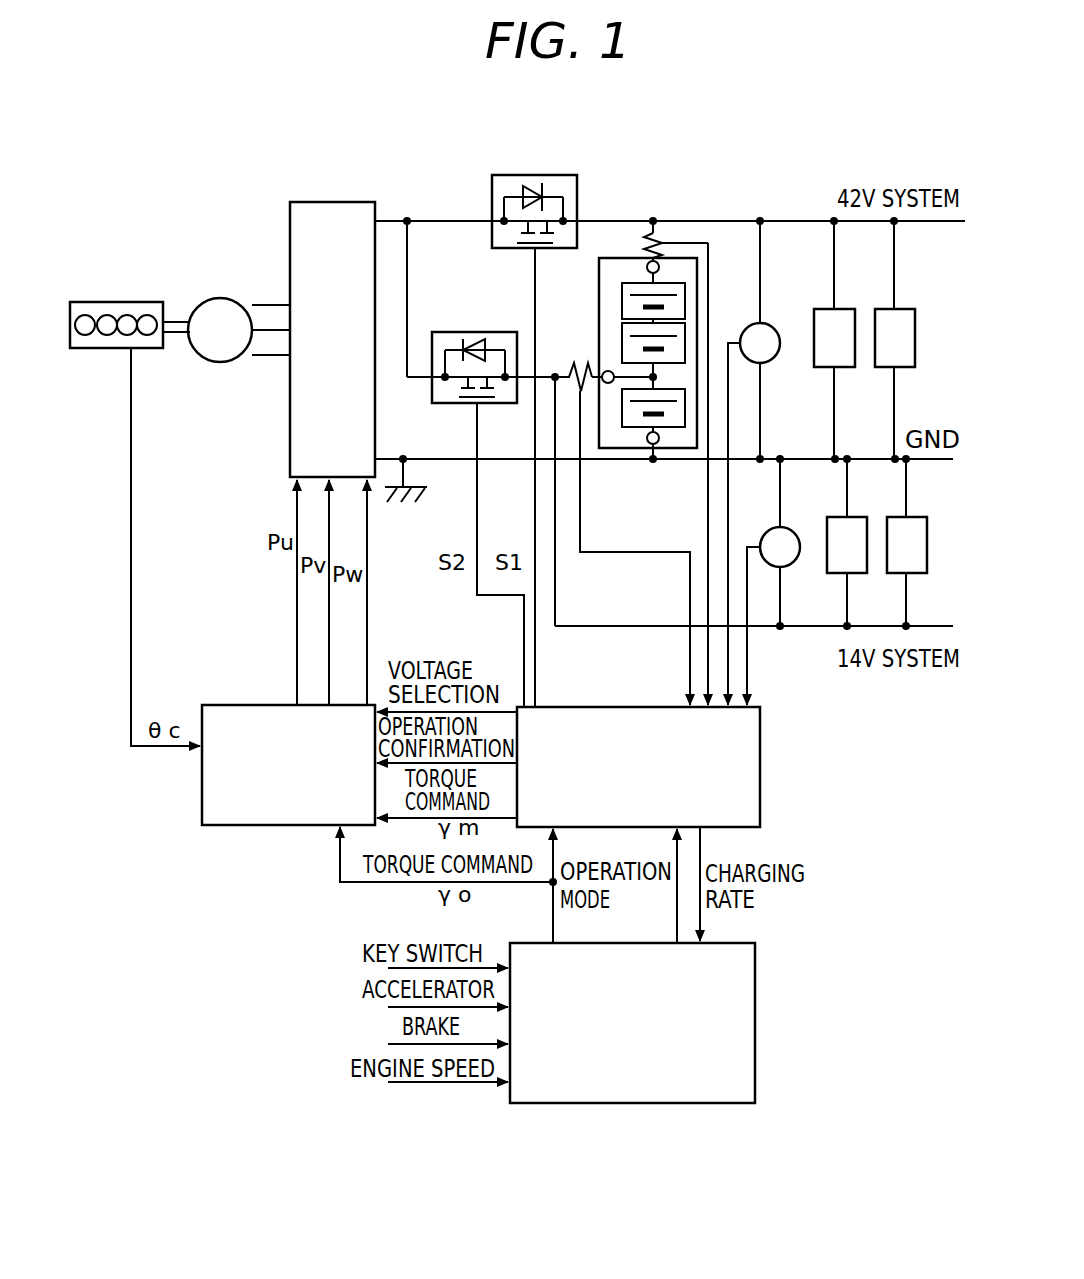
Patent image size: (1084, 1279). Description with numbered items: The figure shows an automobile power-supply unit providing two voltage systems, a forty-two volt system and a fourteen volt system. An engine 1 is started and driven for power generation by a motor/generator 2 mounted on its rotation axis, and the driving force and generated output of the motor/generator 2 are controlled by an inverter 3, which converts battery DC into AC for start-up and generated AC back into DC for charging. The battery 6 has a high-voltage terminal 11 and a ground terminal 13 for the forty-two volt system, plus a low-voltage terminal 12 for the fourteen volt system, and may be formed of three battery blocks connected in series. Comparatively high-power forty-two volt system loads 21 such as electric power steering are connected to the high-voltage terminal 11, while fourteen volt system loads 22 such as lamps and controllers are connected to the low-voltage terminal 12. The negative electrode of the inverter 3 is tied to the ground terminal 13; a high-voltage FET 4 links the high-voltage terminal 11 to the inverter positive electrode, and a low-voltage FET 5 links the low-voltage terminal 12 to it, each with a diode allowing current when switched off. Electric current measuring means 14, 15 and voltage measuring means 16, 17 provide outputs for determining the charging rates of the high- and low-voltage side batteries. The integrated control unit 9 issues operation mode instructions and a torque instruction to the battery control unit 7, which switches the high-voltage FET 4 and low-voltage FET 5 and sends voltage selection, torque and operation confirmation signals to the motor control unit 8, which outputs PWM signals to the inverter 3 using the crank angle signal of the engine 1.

The engine 1 is at (138, 302).
The motor/generator 2 is at (233, 301).
The inverter 3 is at (349, 202).
The high-voltage FET 4 is at (560, 175).
The low-voltage FET 5 is at (483, 332).
The battery 6 is at (697, 296).
The battery control unit 7 is at (760, 736).
The motor control unit 8 is at (255, 705).
The integrated control unit 9 is at (755, 970).
The high-voltage terminal 11 is at (648, 263).
The low-voltage terminal 12 is at (605, 370).
The ground terminal 13 is at (648, 446).
The electric current measuring means 14 is at (662, 240).
The electric current measuring means 15 is at (571, 366).
The voltage measuring means 16 is at (775, 330).
The voltage measuring means 17 is at (795, 535).
The 42V-system loads 21 is at (845, 309).
The 14V-system loads 22 is at (858, 517).